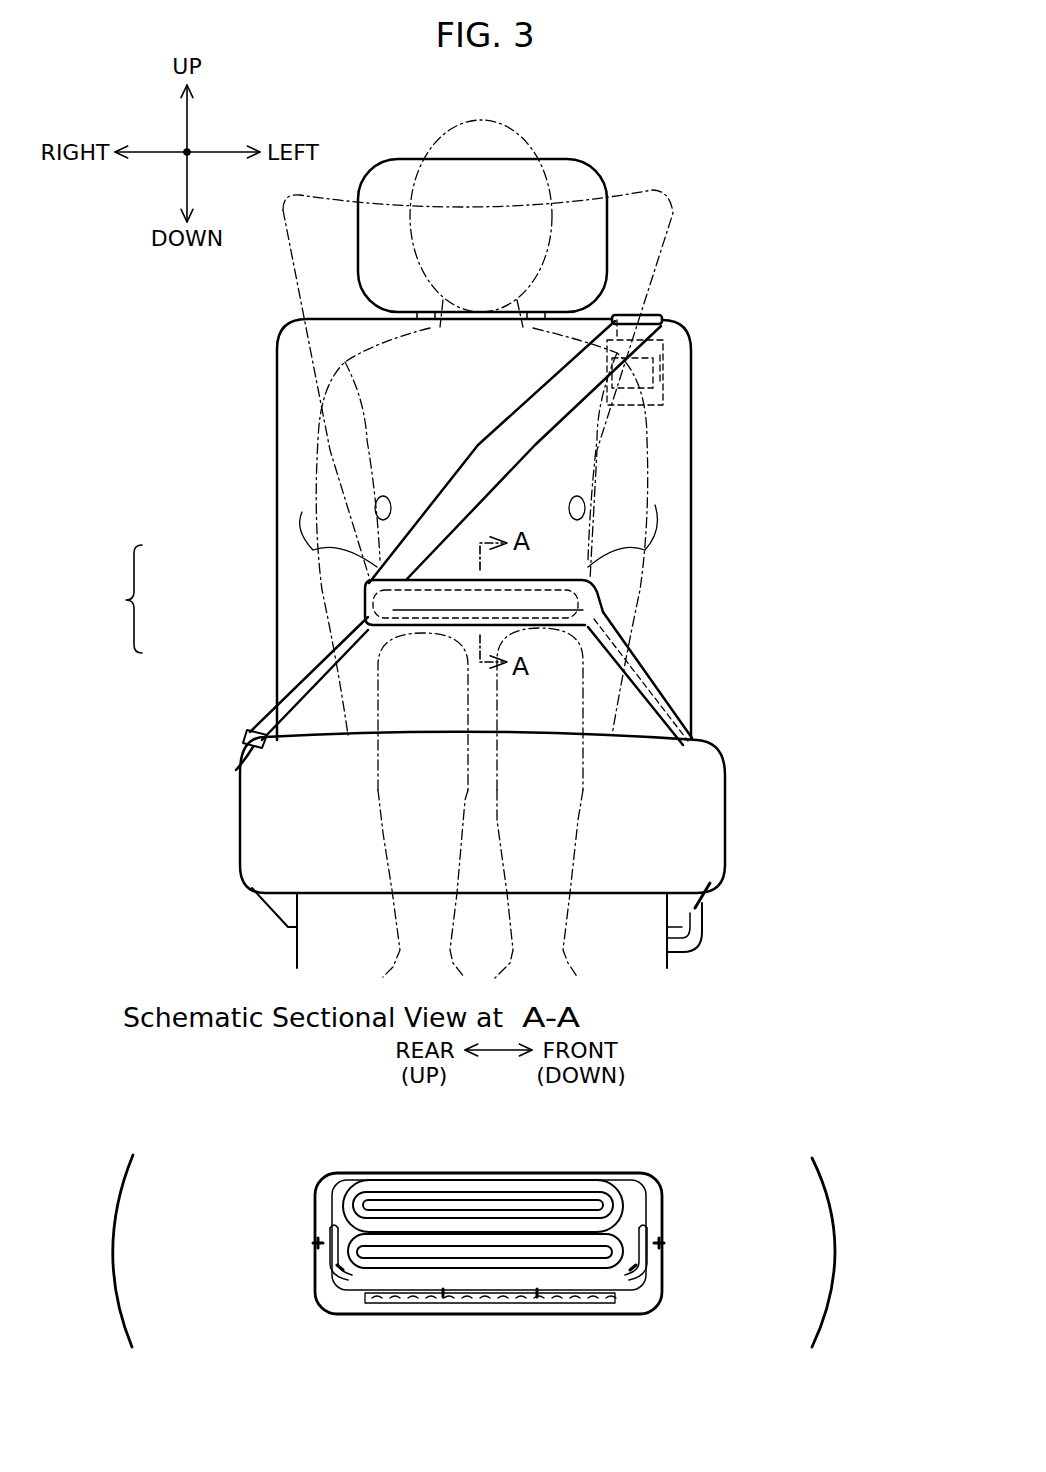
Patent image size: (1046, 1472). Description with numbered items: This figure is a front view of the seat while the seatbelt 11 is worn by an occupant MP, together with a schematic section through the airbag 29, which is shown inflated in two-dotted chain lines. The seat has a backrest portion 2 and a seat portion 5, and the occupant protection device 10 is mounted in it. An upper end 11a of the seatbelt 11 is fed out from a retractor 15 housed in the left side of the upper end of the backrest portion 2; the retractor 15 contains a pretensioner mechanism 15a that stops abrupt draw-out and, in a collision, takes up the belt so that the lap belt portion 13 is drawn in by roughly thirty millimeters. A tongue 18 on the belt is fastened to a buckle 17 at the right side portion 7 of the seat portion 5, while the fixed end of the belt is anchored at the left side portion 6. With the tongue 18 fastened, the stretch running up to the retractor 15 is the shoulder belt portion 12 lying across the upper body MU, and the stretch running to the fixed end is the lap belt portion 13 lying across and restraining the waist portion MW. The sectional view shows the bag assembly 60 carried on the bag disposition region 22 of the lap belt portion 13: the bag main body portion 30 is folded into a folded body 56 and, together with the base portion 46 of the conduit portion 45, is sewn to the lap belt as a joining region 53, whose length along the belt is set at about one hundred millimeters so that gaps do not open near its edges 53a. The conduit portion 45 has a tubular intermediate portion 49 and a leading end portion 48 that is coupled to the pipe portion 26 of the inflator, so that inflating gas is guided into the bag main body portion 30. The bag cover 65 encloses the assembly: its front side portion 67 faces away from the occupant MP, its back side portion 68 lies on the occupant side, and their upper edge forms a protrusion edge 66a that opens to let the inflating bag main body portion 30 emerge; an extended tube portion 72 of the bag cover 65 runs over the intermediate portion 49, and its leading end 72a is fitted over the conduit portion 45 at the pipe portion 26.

The backrest portion 2 is at (262, 434).
The seat portion 5 is at (237, 793).
The left side portion 6 is at (725, 817).
The right side portion 7 is at (237, 827).
The occupant protection device 10 is at (740, 973).
The seatbelt 11 is at (119, 599).
The upper end 11a is at (670, 310).
The shoulder belt portion 12 is at (337, 627).
The lap belt portion 13 is at (328, 677).
The retractor 15 is at (672, 345).
The pretensioner mechanism 15a is at (663, 375).
The buckle 17 is at (252, 733).
The tongue 18 is at (248, 740).
The bag disposition region 22 is at (417, 1293).
The pipe portion 26 is at (693, 933).
The airbag 29 is at (747, 1150).
The bag main body portion 30 is at (678, 190).
The conduit portion 45 is at (573, 1276).
The base portion 46 is at (385, 1282).
The leading end portion 48 is at (703, 913).
The intermediate portion 49 is at (670, 700).
The joining region 53 is at (513, 1294).
The edges 53a is at (537, 1293).
The folded body 56 is at (475, 1190).
The bag assembly 60 is at (565, 571).
The bag cover 65 is at (592, 580).
The protrusion edge 66a is at (312, 1242).
The front side portion 67 is at (315, 1203).
The back side portion 68 is at (315, 1284).
The extended tube portion 72 is at (653, 677).
The leading end 72a is at (703, 903).
The occupant MP is at (545, 133).
The upper body MU is at (425, 412).
The waist portion MW is at (373, 577).